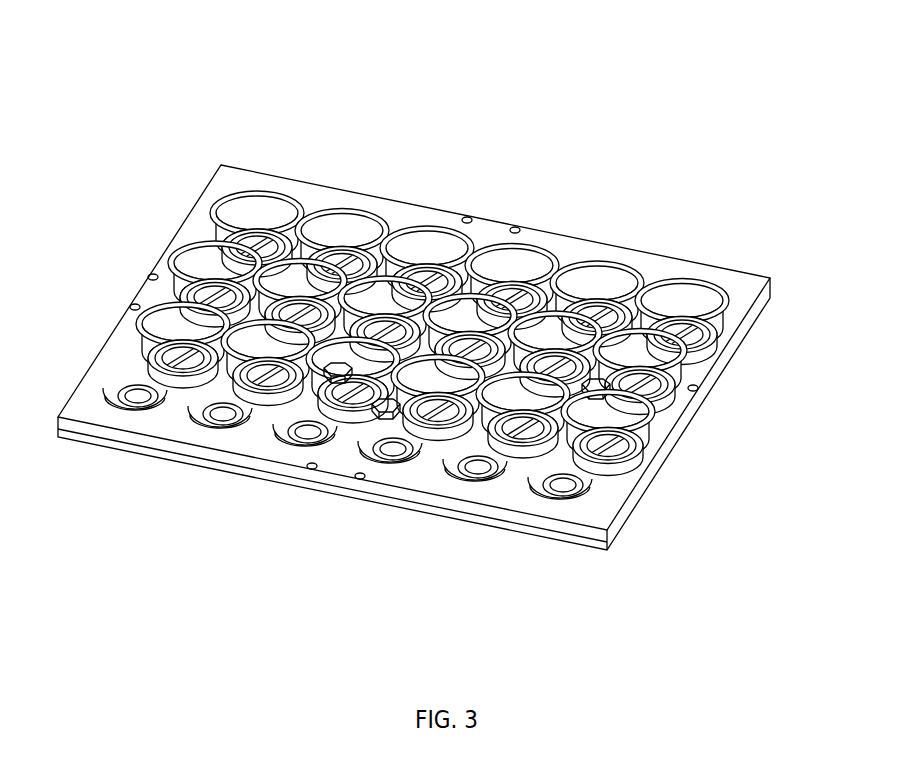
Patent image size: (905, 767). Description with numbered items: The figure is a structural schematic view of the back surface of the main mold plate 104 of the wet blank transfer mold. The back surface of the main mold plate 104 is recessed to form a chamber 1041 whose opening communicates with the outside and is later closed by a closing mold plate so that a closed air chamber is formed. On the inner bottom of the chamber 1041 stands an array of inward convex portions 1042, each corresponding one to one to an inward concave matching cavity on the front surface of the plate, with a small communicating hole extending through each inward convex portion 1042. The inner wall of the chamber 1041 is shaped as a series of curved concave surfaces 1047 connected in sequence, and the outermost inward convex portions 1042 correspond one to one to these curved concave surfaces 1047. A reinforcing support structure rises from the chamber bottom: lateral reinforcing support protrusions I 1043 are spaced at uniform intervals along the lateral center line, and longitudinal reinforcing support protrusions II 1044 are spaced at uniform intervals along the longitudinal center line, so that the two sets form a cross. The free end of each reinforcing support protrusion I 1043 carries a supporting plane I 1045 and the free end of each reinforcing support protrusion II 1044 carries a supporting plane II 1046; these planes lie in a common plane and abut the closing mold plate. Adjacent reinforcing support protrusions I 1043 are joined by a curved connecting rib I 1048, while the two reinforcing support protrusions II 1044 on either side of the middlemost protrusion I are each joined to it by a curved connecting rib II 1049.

The main mold plate 104 is at (262, 436).
The chamber 1041 is at (367, 300).
The inward convex portion 1042 is at (585, 333).
The reinforcing support protrusion I 1043 is at (437, 348).
The reinforcing support protrusion II 1044 is at (388, 428).
The supporting plane I 1045 is at (588, 382).
The supporting plane II 1046 is at (377, 405).
The curved concave surface 1047 is at (523, 262).
The curved connecting rib I 1048 is at (562, 478).
The curved connecting rib II 1049 is at (330, 366).